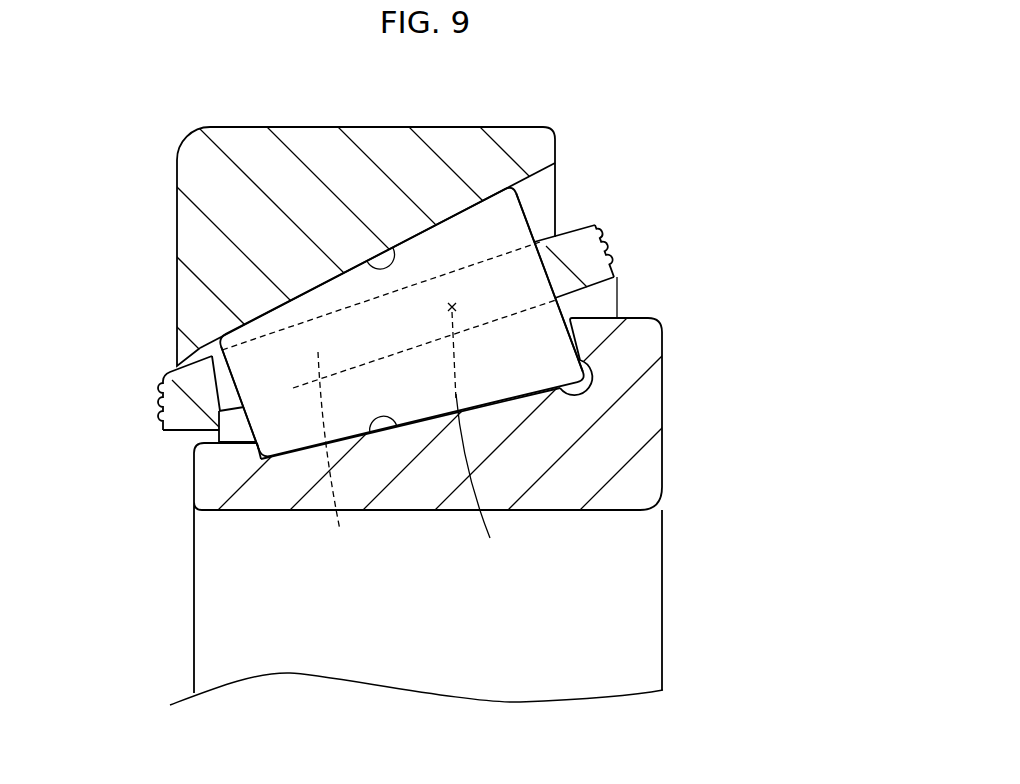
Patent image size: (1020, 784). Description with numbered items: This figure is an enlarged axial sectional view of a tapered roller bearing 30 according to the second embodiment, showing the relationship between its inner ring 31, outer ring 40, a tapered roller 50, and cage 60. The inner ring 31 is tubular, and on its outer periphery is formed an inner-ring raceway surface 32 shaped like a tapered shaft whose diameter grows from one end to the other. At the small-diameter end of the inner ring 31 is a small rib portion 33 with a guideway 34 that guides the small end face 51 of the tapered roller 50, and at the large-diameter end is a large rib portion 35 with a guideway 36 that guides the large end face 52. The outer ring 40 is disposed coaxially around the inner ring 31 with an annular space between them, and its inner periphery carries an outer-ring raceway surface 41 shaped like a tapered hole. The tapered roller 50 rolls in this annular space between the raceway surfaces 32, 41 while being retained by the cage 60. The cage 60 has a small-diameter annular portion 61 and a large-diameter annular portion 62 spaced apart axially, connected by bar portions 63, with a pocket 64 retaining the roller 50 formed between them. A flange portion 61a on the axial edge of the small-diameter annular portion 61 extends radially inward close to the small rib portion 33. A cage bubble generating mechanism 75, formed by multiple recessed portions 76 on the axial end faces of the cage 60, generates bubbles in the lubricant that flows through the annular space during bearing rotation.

The tapered roller bearing 30 is at (175, 232).
The inner ring 31 is at (548, 520).
The inner-ring raceway surface 32 is at (398, 418).
The small rib portion 33 is at (213, 470).
The guideway 34 is at (290, 462).
The large rib portion 35 is at (636, 334).
The guideway 36 is at (586, 405).
The outer ring 40 is at (327, 124).
The outer-ring raceway surface 41 is at (392, 248).
The tapered roller 50 is at (427, 428).
The small end face 51 is at (250, 428).
The large end face 52 is at (560, 302).
The cage 60 is at (592, 222).
The small-diameter annular portion 61 is at (173, 366).
The flange portion 61a is at (222, 431).
The large-diameter annular portion 62 is at (572, 248).
The bar portion 63 is at (335, 454).
The pocket 64 is at (477, 480).
The cage bubble generating mechanism 75 is at (377, 312).
The recessed portion 76 is at (615, 247).